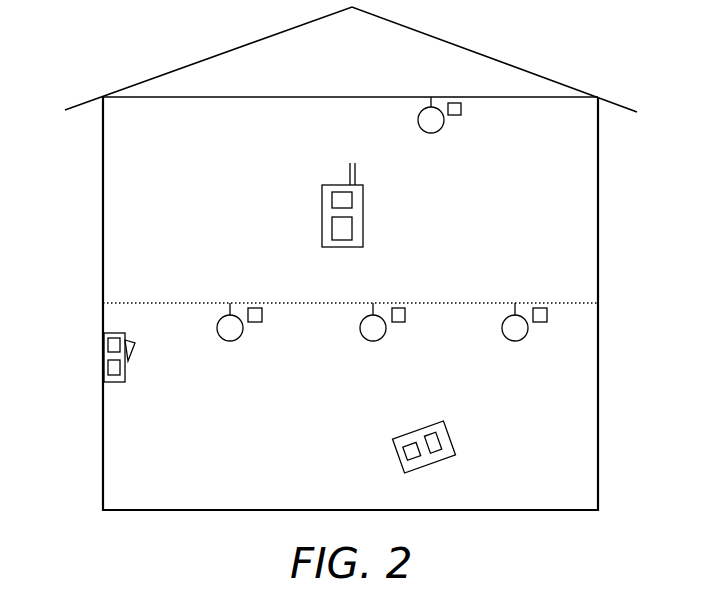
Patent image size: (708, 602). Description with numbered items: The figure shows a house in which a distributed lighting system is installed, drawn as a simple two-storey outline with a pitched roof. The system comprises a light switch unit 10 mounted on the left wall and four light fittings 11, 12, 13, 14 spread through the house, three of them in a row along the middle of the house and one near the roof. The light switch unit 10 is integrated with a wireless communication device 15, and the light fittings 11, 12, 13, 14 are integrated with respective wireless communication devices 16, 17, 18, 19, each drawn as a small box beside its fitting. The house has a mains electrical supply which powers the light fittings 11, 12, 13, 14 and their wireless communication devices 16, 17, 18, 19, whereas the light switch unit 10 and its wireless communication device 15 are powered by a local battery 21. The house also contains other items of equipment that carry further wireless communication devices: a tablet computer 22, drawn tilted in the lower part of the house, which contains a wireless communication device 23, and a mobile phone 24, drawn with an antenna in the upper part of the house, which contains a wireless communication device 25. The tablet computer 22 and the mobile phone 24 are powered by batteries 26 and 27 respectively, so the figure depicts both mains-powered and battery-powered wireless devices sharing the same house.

The light switch unit 10 is at (117, 384).
The light fitting 11 is at (232, 341).
The light fitting 12 is at (375, 341).
The light fitting 13 is at (517, 341).
The light fitting 14 is at (432, 133).
The wireless communication device 15 is at (104, 370).
The wireless communication device 16 is at (254, 308).
The wireless communication device 17 is at (398, 308).
The wireless communication device 18 is at (540, 308).
The wireless communication device 19 is at (461, 108).
The local battery 21 is at (104, 347).
The tablet computer 22 is at (450, 430).
The wireless communication device 23 is at (397, 450).
The mobile phone 24 is at (363, 217).
The wireless communication device 25 is at (332, 230).
The battery 26 is at (440, 457).
The battery 27 is at (332, 202).